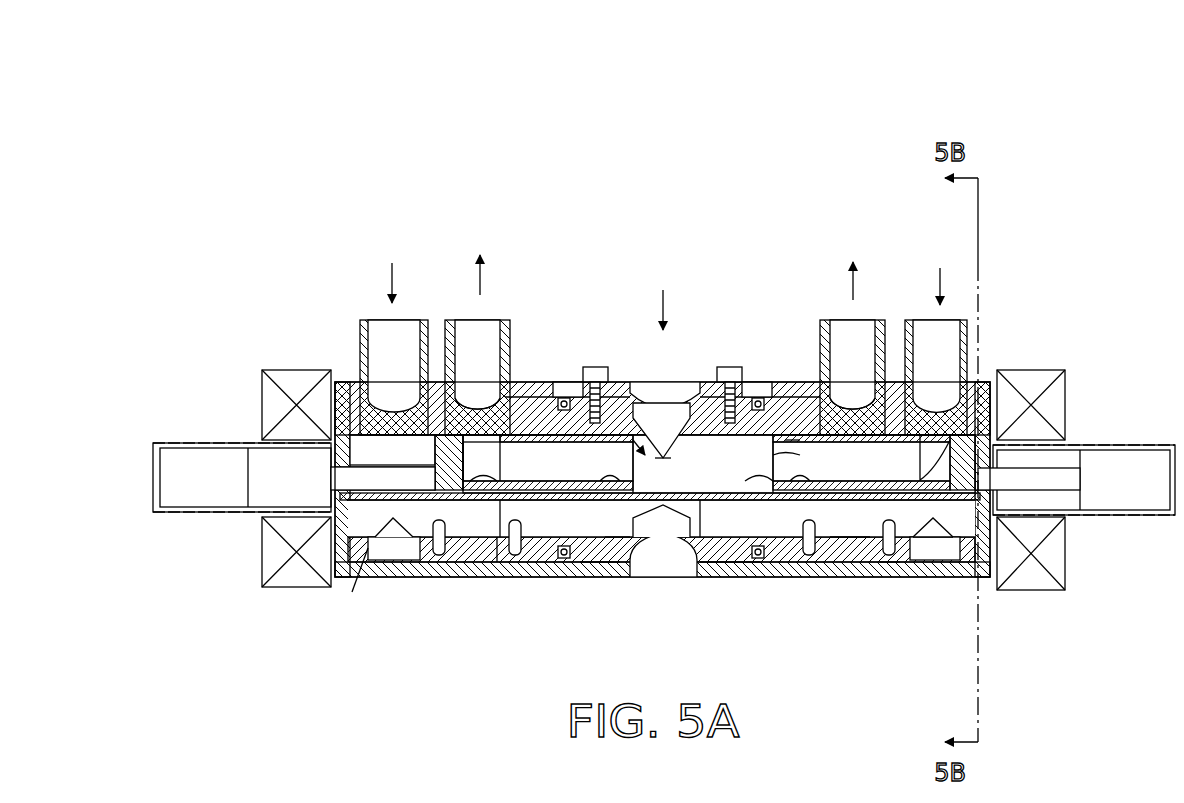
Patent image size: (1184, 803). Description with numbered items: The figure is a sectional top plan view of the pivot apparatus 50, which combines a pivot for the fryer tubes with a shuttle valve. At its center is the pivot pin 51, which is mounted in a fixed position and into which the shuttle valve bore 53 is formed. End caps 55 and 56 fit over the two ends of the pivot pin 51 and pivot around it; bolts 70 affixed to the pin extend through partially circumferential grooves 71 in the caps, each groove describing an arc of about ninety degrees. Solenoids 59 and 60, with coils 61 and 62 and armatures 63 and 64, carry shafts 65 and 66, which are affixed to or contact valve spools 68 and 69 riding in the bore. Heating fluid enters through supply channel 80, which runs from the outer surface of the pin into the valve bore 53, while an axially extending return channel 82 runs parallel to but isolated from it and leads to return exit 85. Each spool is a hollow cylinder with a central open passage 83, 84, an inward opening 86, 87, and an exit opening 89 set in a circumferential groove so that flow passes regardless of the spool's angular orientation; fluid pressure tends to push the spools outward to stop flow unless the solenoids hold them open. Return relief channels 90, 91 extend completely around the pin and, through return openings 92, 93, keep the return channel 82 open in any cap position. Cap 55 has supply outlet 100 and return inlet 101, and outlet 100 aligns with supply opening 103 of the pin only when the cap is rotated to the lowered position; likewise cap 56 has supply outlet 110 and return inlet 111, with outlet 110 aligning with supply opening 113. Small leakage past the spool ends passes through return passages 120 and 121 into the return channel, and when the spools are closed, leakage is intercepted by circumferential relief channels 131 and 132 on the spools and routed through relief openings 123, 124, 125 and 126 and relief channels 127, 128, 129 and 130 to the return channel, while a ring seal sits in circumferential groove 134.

The pivot apparatus 50 is at (808, 190).
The pivot pin 51 is at (723, 553).
The shuttle valve bore 53 is at (768, 491).
The end cap 55 is at (890, 583).
The end cap 56 is at (595, 562).
The solenoid 59 is at (183, 513).
The solenoid 60 is at (1127, 518).
The coil 61 is at (232, 512).
The coil 62 is at (1165, 516).
The armature 63 is at (323, 448).
The armature 64 is at (1130, 447).
The shaft 65 is at (383, 470).
The shaft 66 is at (1065, 483).
The valve spool 68 is at (497, 562).
The valve spool 69 is at (852, 543).
The bolt 70 is at (594, 370).
The groove 71 is at (588, 392).
The supply channel 80 is at (663, 425).
The return channel 82 is at (620, 548).
The central open passage 83 is at (648, 464).
The central open passage 84 is at (790, 445).
The return exit 85 is at (663, 568).
The inward opening 86 is at (665, 460).
The inward opening 87 is at (773, 464).
The exit opening 89 is at (478, 456).
The return relief channel 90 is at (347, 582).
The return relief channel 91 is at (942, 560).
The return opening 92 is at (393, 545).
The return opening 93 is at (928, 540).
The supply outlet 100 is at (867, 352).
The return inlet 101 is at (952, 352).
The supply opening 103 is at (847, 412).
The supply outlet 110 is at (490, 354).
The return inlet 111 is at (378, 354).
The supply opening 113 is at (463, 408).
The return passage 120 is at (348, 496).
The return passage 121 is at (976, 576).
The relief opening 123 is at (885, 540).
The relief opening 124 is at (808, 498).
The relief opening 125 is at (537, 497).
The relief opening 126 is at (457, 493).
The relief channel 127 is at (437, 538).
The relief channel 128 is at (514, 540).
The relief channel 129 is at (811, 540).
The relief channel 130 is at (752, 556).
The circumferential relief channel 131 is at (528, 446).
The circumferential relief channel 132 is at (822, 447).
The circumferential groove 134 is at (566, 558).